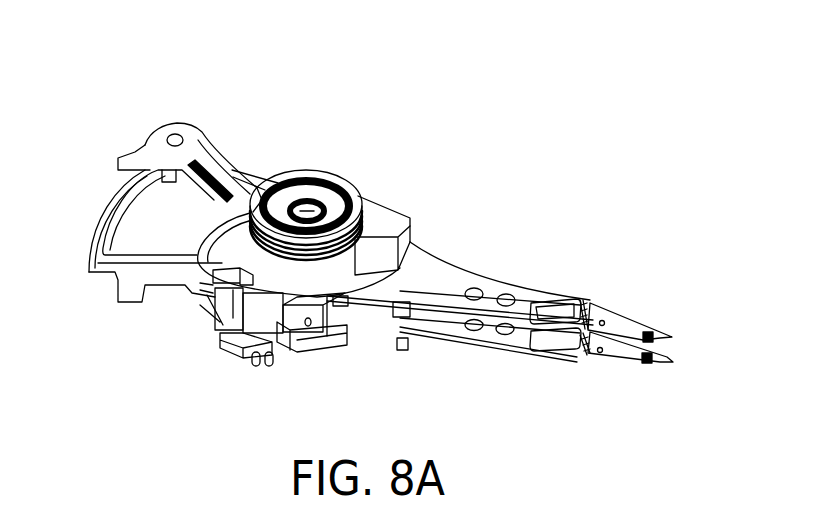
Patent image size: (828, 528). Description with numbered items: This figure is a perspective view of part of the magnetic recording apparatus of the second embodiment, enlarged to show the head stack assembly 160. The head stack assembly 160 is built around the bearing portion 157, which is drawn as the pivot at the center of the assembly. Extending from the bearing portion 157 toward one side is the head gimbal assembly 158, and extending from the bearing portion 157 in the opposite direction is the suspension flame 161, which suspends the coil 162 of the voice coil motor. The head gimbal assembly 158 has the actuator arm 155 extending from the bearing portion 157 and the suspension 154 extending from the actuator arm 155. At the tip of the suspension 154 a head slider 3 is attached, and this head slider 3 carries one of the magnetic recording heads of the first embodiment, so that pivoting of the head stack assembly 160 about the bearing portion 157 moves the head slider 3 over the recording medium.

The suspension flame 161 is at (213, 150).
The coil 162 is at (170, 252).
The bearing portion 157 is at (345, 150).
The head stack assembly 160 is at (457, 200).
The head gimbal assembly 158 is at (497, 243).
The actuator arm 155 is at (527, 300).
The suspension 154 is at (627, 327).
The head slider 3 is at (655, 335).